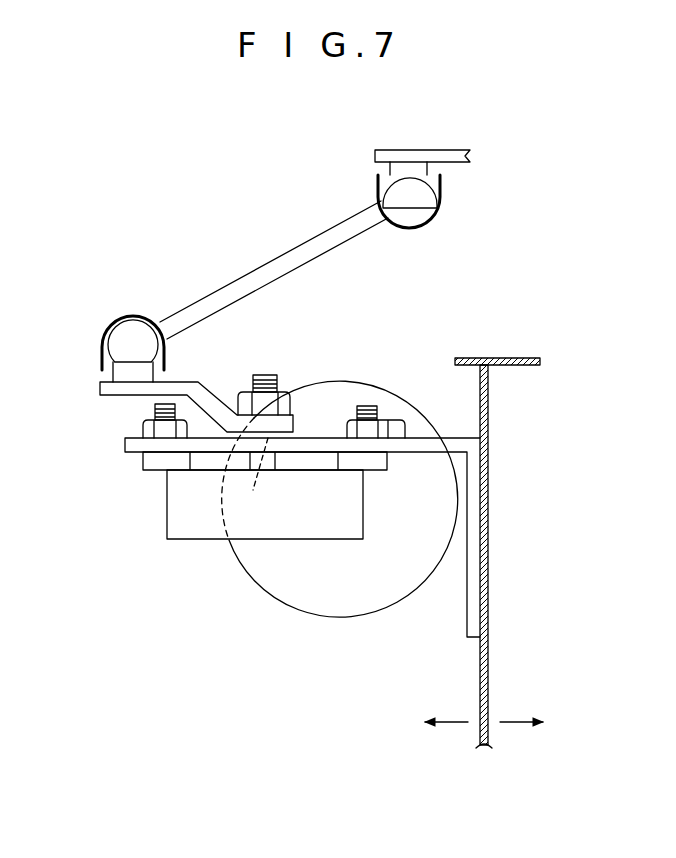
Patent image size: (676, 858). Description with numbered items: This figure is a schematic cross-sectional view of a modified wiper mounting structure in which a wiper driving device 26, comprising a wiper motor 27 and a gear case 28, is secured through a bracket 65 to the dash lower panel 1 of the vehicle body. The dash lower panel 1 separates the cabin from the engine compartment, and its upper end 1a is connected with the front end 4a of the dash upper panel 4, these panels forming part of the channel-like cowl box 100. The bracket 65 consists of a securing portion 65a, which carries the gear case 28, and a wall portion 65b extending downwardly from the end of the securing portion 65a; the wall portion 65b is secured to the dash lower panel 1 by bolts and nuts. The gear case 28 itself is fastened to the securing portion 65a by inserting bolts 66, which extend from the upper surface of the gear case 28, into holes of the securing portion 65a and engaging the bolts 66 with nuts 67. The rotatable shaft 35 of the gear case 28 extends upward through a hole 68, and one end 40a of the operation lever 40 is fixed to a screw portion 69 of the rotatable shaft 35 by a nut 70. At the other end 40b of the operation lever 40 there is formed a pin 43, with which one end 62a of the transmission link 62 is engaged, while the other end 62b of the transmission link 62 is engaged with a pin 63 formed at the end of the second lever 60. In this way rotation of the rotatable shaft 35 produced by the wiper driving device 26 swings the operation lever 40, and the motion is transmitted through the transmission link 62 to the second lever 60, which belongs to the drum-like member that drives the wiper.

The cowl box 100 is at (496, 269).
The second lever 60 is at (450, 150).
The pin 63 is at (427, 197).
The transmission link 62 is at (275, 258).
The one end of transmission link 62a is at (166, 323).
The other end of transmission link 62b is at (371, 227).
The pin 43 is at (118, 338).
The operation lever 40 is at (196, 386).
The end of operation lever 40a is at (297, 413).
The other end of operation lever 40b is at (108, 388).
The screw portion 69 is at (272, 375).
The nut 70 is at (239, 396).
The bracket 65 is at (456, 420).
The securing portion 65a is at (313, 445).
The wall portion 65b is at (480, 517).
The bolts 66 is at (155, 406).
The nuts 67 is at (147, 422).
The rotatable shaft 35 is at (277, 458).
The hole 68 is at (257, 477).
The gear case 28 is at (210, 525).
The wiper motor 27 is at (310, 595).
The wiper driving device 26 is at (240, 585).
The dash upper panel 4 is at (530, 357).
The front end of dash upper panel 4a is at (462, 357).
The dash lower panel 1 is at (490, 675).
The upper end of dash lower panel 1a is at (463, 372).